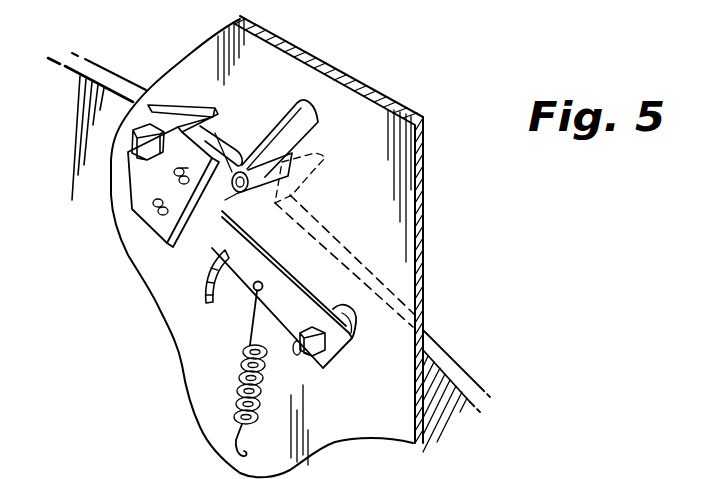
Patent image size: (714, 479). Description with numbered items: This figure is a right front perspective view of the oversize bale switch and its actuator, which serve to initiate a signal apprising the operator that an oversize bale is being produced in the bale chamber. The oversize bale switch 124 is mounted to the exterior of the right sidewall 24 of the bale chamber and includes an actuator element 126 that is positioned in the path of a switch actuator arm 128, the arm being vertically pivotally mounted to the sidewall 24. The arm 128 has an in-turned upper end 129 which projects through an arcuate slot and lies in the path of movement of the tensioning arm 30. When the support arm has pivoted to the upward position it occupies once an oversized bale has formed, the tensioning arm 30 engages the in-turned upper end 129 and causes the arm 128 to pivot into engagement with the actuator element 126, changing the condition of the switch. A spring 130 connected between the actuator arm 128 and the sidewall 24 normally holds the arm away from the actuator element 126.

The right sidewall 24 is at (288, 67).
The tensioning arm 30 is at (447, 352).
The oversize bale switch 124 is at (140, 222).
The actuator element 126 is at (240, 158).
The switch actuator arm 128 is at (225, 256).
The in-turned upper end 129 is at (328, 163).
The spring 130 is at (238, 382).